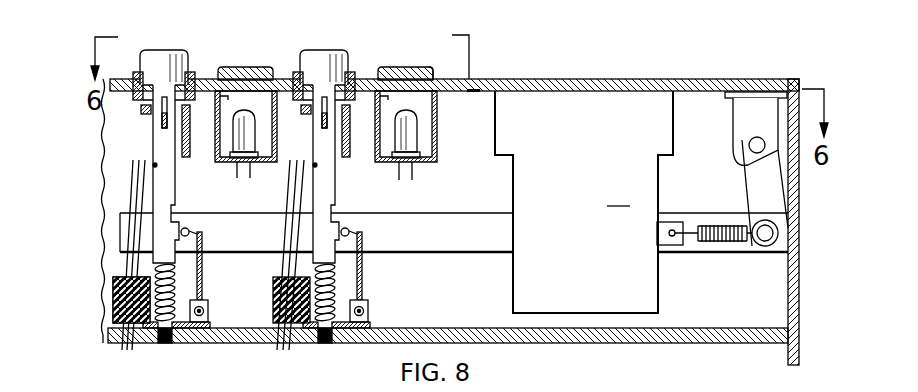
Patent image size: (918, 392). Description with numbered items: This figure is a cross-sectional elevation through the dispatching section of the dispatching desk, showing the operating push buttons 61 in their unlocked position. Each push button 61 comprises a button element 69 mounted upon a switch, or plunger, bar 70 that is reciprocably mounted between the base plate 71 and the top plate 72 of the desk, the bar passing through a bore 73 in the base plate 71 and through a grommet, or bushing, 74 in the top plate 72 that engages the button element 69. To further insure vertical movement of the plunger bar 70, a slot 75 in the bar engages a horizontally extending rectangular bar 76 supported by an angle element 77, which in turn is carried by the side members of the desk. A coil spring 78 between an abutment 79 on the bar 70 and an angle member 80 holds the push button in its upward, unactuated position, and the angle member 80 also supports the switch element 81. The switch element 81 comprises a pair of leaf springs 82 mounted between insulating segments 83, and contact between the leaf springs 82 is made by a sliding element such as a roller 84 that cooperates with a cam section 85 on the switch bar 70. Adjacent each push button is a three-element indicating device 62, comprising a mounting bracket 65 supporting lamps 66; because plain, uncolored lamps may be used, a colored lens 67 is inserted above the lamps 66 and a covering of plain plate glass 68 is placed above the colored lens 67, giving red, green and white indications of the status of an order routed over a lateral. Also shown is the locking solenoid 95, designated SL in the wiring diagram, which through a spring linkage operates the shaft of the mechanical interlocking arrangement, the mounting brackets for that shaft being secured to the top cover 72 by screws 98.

The push button 61 is at (330, 50).
The three-element indicating device 62 is at (252, 67).
The mounting bracket 65 is at (434, 163).
The lamp 66 is at (417, 135).
The colored lens 67 is at (405, 96).
The plate glass 68 is at (431, 70).
The button element 69 is at (338, 50).
The plunger bar 70 is at (337, 200).
The base plate 71 is at (418, 328).
The top plate 72 is at (492, 79).
The bore 73 is at (327, 343).
The grommet 74 is at (352, 76).
The slot 75 is at (319, 114).
The rectangular bar 76 is at (326, 128).
The angle element 77 is at (347, 152).
The coil spring 78 is at (334, 286).
The abutment 79 is at (330, 262).
The angle member 80 is at (366, 322).
The switch element 81 is at (273, 296).
The leaf springs 82 is at (291, 201).
The insulating segments 83 is at (274, 283).
The roller 84 is at (318, 168).
The cam section 85 is at (310, 133).
The locking solenoid 95 is at (584, 202).
The screws 98 is at (750, 103).